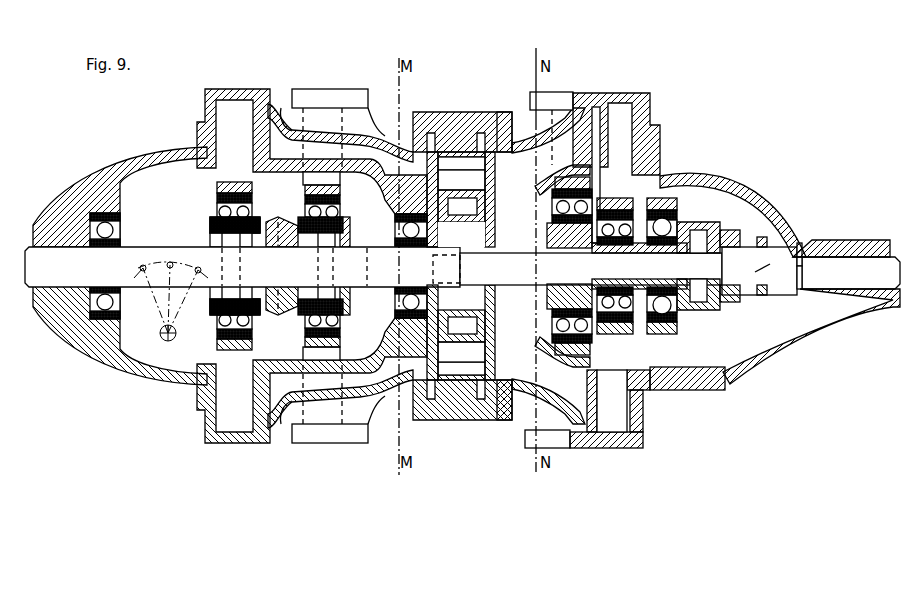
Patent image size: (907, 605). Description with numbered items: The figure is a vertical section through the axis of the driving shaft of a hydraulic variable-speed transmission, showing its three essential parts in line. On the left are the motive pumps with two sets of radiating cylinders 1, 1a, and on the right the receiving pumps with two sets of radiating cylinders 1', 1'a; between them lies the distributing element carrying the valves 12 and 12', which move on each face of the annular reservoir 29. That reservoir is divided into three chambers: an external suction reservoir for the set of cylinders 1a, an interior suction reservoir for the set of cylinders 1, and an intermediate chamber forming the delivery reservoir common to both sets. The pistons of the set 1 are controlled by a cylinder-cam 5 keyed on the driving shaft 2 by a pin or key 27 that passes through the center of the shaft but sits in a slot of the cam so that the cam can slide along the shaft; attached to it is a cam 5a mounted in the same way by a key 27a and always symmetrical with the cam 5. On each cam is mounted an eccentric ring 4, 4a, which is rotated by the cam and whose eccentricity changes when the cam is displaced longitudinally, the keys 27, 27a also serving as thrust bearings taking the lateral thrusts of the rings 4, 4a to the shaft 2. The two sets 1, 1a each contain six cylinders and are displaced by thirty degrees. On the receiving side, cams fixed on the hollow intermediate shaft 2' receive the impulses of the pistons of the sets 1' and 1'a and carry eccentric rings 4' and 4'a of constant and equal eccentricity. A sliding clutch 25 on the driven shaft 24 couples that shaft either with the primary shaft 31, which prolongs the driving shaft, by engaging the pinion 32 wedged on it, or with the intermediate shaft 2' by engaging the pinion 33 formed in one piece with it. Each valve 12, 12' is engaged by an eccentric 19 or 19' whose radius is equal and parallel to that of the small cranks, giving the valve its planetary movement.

The set of radiating cylinders of the motive pumps 1 is at (340, 249).
The set of radiating cylinders of the motive pumps 1a is at (213, 122).
The set of radiating cylinders of the receiving pumps 1' is at (554, 244).
The set of radiating cylinders of the receiving pumps 1'a is at (634, 270).
The driving shaft 2 is at (120, 249).
The hollow shaft 2' is at (775, 290).
The eccentric ring 4 is at (305, 246).
The eccentric ring 4a is at (215, 215).
The eccentric ring 4' is at (634, 238).
The eccentric ring 4'a is at (685, 243).
The cylinder-cam 5 is at (347, 258).
The cam 5a is at (203, 258).
The valve 12 is at (462, 246).
The valve 12' is at (511, 246).
The eccentric 19 is at (449, 266).
The eccentric 19' is at (473, 266).
The driven shaft 24 is at (770, 286).
The sliding clutch 25 is at (770, 240).
The pin or key 27 is at (340, 230).
The pin or key 27a is at (212, 228).
The annular reservoir 29 is at (461, 205).
The primary shaft 31 is at (577, 269).
The pinion 32 is at (737, 237).
The pinion 33 is at (720, 227).